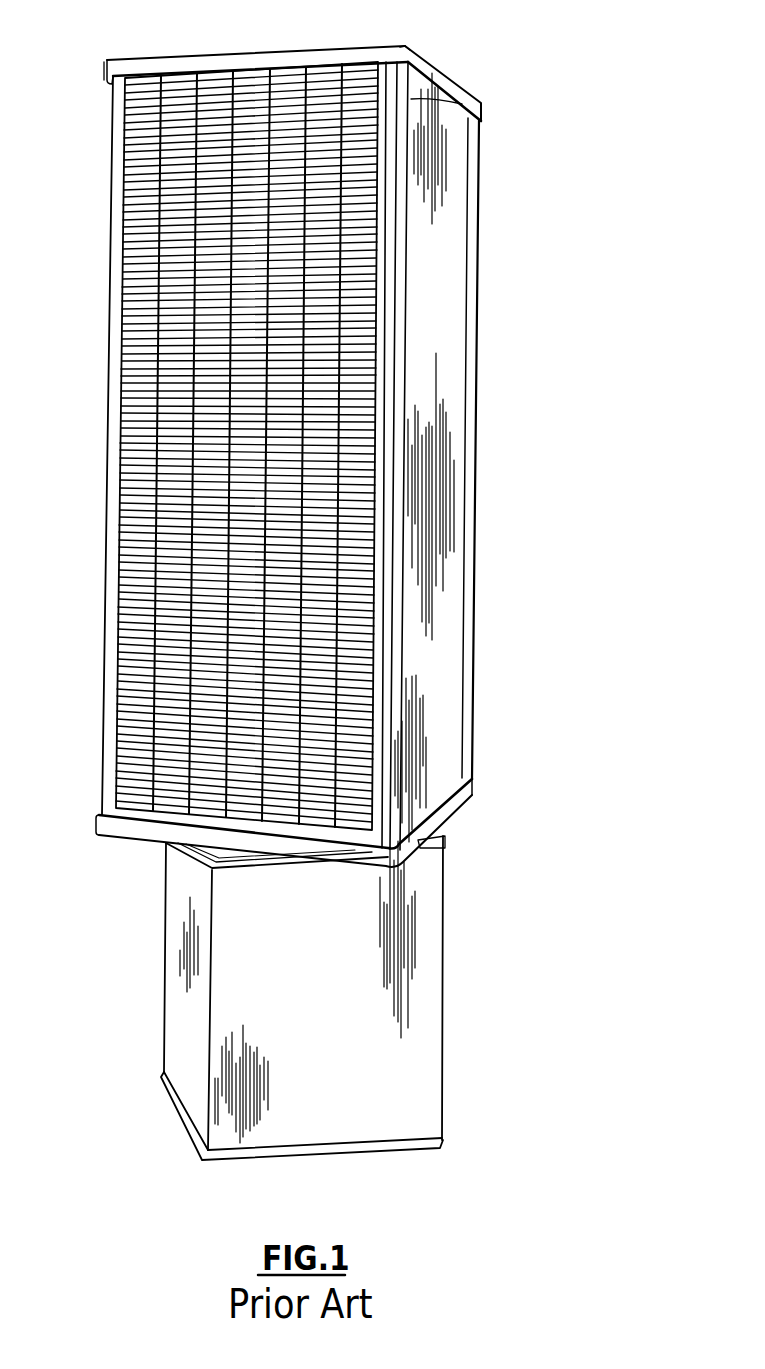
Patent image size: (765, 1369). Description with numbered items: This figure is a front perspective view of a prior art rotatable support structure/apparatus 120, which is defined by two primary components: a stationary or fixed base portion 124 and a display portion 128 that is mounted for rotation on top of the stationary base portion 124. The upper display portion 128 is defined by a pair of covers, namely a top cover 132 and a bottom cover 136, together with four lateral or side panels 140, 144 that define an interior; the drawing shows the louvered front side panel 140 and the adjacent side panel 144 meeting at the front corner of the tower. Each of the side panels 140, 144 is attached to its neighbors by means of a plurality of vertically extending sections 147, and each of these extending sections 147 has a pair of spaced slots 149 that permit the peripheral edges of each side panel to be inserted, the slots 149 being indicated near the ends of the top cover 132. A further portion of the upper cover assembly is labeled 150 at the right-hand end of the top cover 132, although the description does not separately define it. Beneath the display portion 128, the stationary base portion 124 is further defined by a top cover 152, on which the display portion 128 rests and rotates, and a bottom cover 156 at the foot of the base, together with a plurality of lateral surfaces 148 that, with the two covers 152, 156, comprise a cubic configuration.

The rotatable support structure/apparatus 120 is at (533, 320).
The stationary base portion 124 is at (425, 970).
The display portion 128 is at (462, 470).
The top cover 132 is at (438, 72).
The bottom cover 136 is at (463, 790).
The side panel 140 is at (128, 724).
The side panel 144 is at (455, 632).
The vertically extending section 147 is at (408, 212).
The lateral surface 148 is at (225, 975).
The spaced slot 149 is at (110, 62).
The top cap side portion 150 is at (466, 96).
The top cover 152 is at (457, 853).
The bottom cover 156 is at (407, 1146).